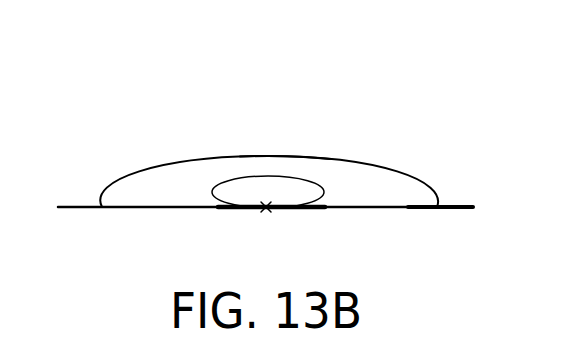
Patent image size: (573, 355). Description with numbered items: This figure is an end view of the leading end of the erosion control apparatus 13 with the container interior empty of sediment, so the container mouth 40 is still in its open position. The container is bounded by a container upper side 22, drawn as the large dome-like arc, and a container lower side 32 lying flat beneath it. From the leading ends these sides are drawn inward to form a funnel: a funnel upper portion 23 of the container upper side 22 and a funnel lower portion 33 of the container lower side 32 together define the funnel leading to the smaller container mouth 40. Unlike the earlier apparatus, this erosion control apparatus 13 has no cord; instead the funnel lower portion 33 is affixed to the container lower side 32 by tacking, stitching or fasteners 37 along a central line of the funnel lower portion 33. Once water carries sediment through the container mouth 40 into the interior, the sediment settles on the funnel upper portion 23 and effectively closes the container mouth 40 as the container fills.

The erosion control apparatus 13 is at (110, 93).
The container upper side 22 is at (368, 162).
The funnel upper portion 23 is at (288, 170).
The container lower side 32 is at (432, 203).
The funnel lower portion 33 is at (213, 208).
The fasteners 37 is at (272, 207).
The container mouth 40 is at (265, 175).